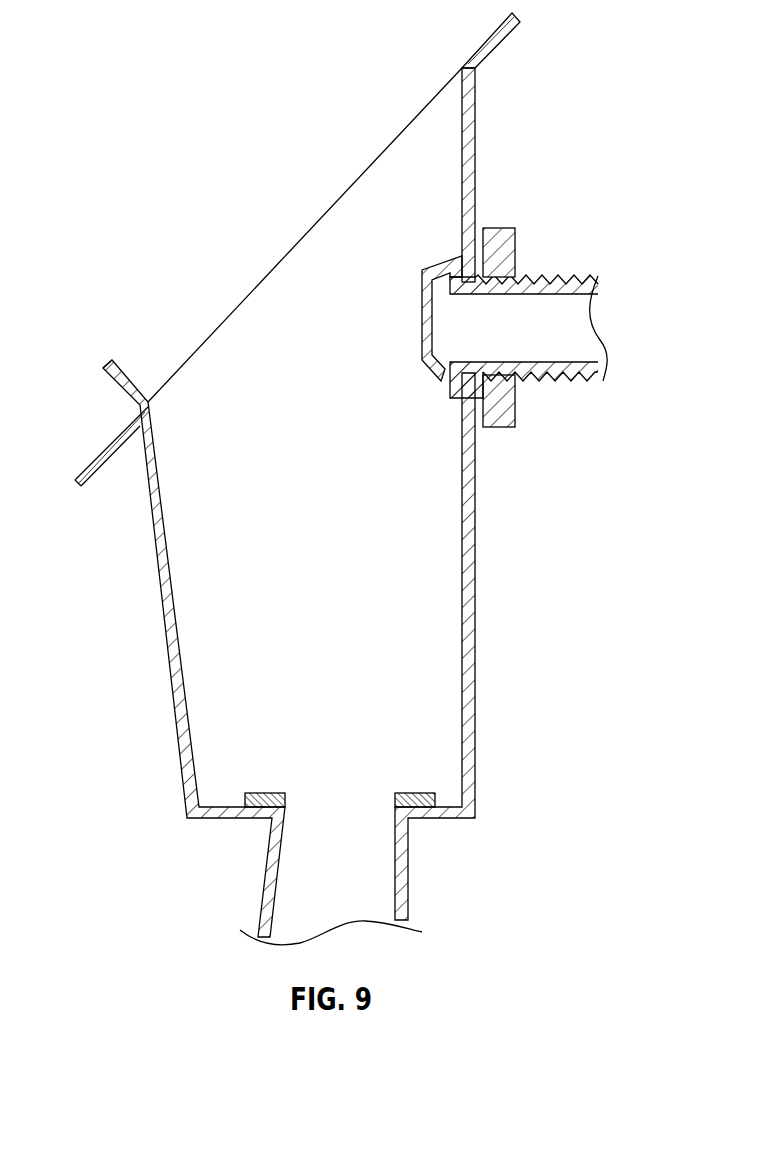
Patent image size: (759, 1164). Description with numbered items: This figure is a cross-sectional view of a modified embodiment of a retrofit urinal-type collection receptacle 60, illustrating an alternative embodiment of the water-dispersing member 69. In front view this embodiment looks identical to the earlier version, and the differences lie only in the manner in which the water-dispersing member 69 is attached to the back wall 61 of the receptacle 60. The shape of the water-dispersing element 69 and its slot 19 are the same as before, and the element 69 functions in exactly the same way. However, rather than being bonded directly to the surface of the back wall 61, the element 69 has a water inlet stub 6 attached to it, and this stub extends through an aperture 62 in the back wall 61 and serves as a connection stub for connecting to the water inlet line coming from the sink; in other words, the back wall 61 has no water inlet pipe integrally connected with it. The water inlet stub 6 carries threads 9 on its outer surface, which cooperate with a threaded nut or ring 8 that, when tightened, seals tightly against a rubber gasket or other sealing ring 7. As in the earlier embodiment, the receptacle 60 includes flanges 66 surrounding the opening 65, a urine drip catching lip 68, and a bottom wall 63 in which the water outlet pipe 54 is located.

The water inlet stub 6 is at (568, 359).
The sealing ring 7 is at (478, 400).
The threaded nut 8 is at (497, 228).
The threads 9 is at (560, 275).
The slot 19 is at (447, 390).
The water outlet pipe 54 is at (370, 852).
The retrofit urinal-type collection receptacle 60 is at (497, 604).
The back wall 61 is at (165, 625).
The aperture 62 is at (474, 287).
The bottom wall 63 is at (235, 809).
The opening 65 is at (290, 238).
The flanges 66 is at (486, 40).
The urine drip catching lip 68 is at (105, 364).
The water-dispersing member 69 is at (420, 310).